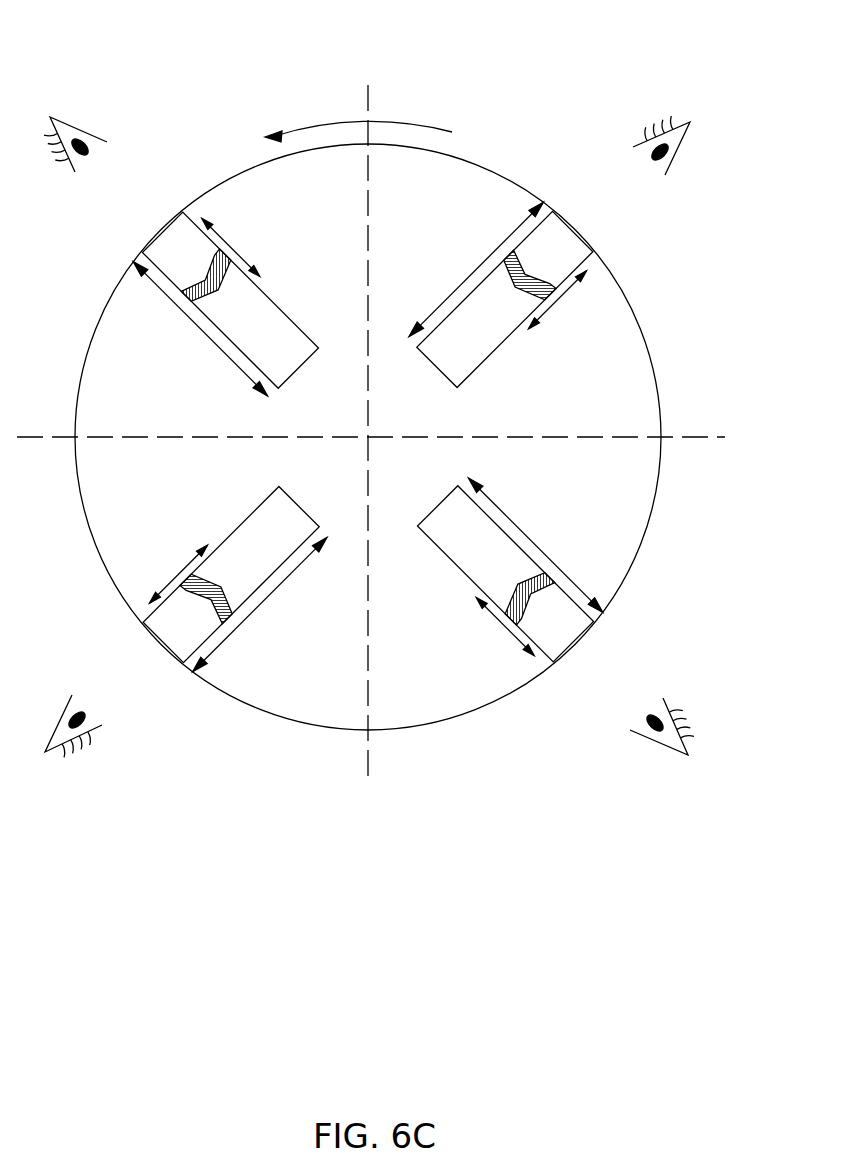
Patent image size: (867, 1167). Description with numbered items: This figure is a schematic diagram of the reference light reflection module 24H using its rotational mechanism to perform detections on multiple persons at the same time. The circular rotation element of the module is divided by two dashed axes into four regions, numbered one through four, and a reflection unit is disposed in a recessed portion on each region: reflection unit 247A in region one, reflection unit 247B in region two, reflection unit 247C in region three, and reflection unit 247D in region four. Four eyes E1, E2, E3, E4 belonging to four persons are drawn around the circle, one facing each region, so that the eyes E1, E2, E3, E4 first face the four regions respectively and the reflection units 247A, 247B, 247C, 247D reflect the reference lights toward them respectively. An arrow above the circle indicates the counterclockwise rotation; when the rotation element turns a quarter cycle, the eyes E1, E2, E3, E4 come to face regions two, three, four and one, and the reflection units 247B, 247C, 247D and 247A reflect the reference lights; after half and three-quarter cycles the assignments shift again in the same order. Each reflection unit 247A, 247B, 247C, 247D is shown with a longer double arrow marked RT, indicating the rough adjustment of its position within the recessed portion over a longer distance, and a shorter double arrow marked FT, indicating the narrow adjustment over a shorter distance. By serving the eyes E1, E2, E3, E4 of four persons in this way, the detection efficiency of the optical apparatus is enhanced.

The reference light reflection module 24H is at (137, 29).
The reflection unit 247A is at (523, 262).
The reflection unit 247B is at (548, 590).
The reflection unit 247C is at (215, 610).
The reflection unit 247D is at (190, 280).
The eye E1 is at (670, 143).
The eye E2 is at (665, 737).
The eye E3 is at (60, 730).
The eye E4 is at (72, 133).